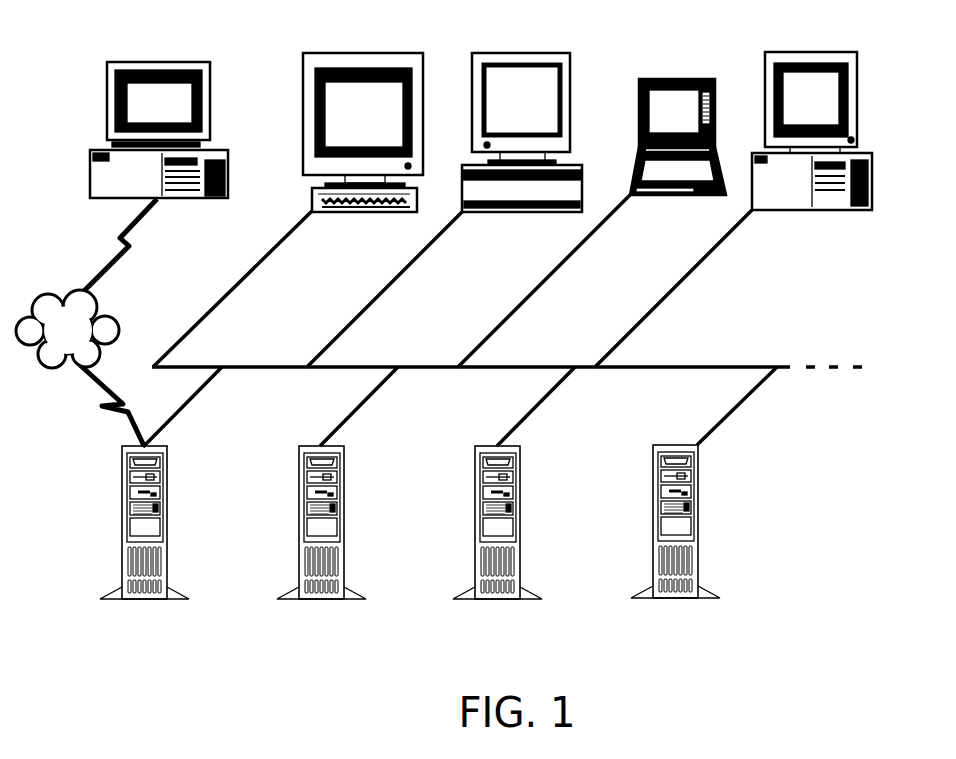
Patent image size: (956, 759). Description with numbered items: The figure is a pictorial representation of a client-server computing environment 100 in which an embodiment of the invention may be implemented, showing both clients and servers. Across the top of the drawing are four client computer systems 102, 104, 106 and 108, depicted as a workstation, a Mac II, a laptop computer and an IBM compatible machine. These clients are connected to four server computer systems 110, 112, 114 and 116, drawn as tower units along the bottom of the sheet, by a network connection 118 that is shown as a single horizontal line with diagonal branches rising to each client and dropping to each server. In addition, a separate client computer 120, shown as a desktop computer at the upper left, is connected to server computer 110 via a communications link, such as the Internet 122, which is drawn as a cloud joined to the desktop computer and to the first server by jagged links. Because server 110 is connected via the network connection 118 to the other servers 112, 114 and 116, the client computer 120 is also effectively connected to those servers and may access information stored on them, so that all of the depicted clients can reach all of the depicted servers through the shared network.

The computing environment 100 is at (809, 484).
The client computer system 102 is at (362, 53).
The client computer system 104 is at (524, 52).
The client computer system 106 is at (695, 79).
The client computer system 108 is at (802, 52).
The server computer system 110 is at (167, 521).
The server computer system 112 is at (344, 521).
The server computer system 114 is at (520, 521).
The server computer system 116 is at (698, 522).
The network connection 118 is at (618, 368).
The client computer 120 is at (158, 61).
The Internet 122 is at (118, 328).